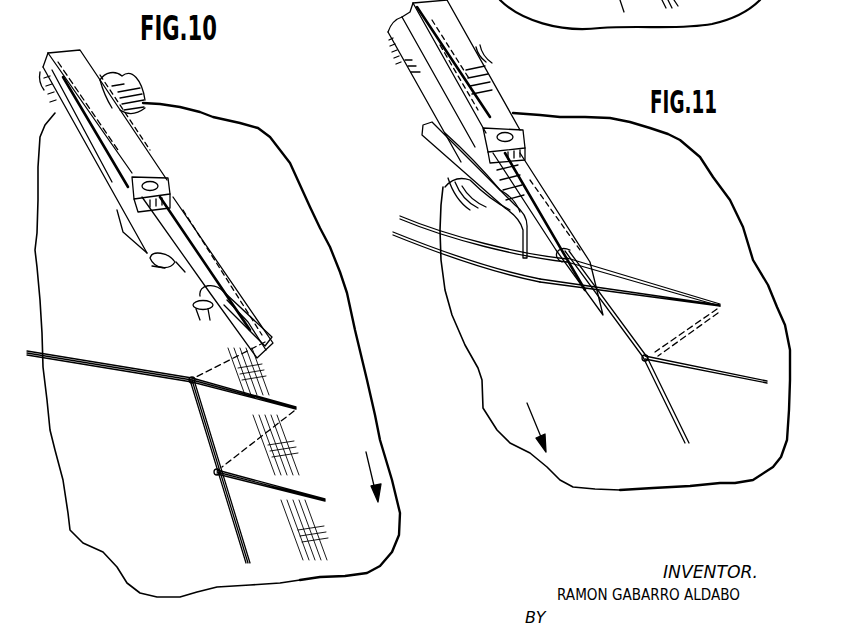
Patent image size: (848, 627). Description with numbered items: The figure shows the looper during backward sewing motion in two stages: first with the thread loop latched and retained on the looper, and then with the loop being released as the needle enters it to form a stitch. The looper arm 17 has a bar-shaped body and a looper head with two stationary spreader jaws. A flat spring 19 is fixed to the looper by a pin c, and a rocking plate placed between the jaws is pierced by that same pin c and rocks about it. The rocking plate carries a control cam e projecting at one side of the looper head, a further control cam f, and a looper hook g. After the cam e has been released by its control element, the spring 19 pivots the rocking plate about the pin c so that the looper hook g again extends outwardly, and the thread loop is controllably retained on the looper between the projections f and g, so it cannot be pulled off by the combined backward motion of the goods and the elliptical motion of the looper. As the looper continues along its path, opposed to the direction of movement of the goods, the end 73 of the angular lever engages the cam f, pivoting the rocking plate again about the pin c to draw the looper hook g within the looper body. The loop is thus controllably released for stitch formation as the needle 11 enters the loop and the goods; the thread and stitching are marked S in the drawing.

In FIG. 10, the flat spring 19 is at (108, 185).
In FIG. 11, the flat spring 19 is at (430, 90).
In FIG. 10, the looper arm 17 is at (143, 100).
In FIG. 11, the looper arm 17 is at (473, 83).
In FIG. 11, the end of angular lever 73 is at (445, 185).
In FIG. 11, the needle 11 is at (488, 275).
In FIG. 10, the pin c is at (156, 184).
In FIG. 11, the pin c is at (525, 135).
In FIG. 10, the control cam e is at (121, 86).
In FIG. 11, the control cam e is at (483, 53).
In FIG. 10, the control cam f is at (155, 262).
In FIG. 10, the looper hook g is at (194, 306).
In FIG. 10, the stitch S is at (322, 420).
In FIG. 11, the stitch S is at (744, 317).